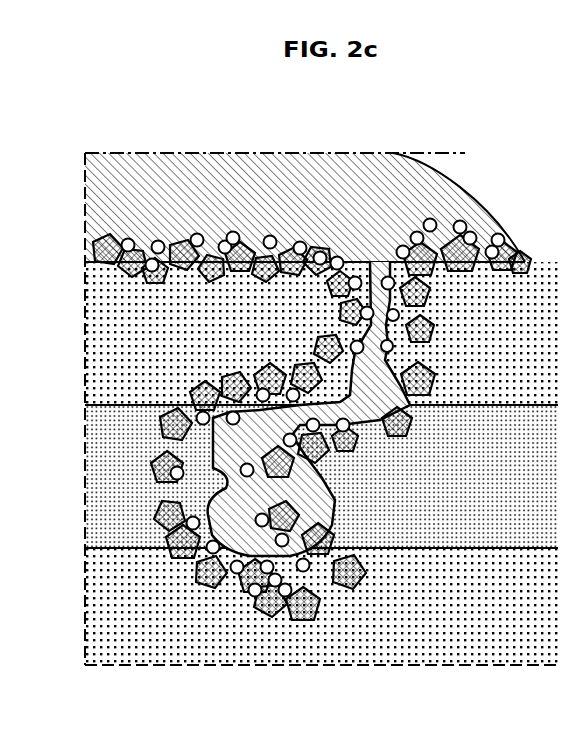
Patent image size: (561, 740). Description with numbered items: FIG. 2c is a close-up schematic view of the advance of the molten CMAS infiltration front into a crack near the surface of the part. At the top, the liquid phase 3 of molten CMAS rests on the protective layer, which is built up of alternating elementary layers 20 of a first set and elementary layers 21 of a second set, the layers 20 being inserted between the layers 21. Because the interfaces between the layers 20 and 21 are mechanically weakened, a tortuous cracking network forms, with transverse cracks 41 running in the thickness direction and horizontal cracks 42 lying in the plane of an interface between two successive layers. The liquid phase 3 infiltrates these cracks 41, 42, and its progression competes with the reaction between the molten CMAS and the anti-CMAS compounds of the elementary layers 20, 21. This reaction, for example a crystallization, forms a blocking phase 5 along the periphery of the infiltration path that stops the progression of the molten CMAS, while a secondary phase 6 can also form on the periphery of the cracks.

The liquid phase 3 is at (254, 178).
The elementary layers of a first set 20 is at (122, 336).
The elementary layers of a second set 21 is at (122, 480).
The transverse cracks 41 is at (358, 388).
The horizontal cracks 42 is at (193, 500).
The blocking phase 5 is at (323, 427).
The secondary phase 6 is at (396, 348).